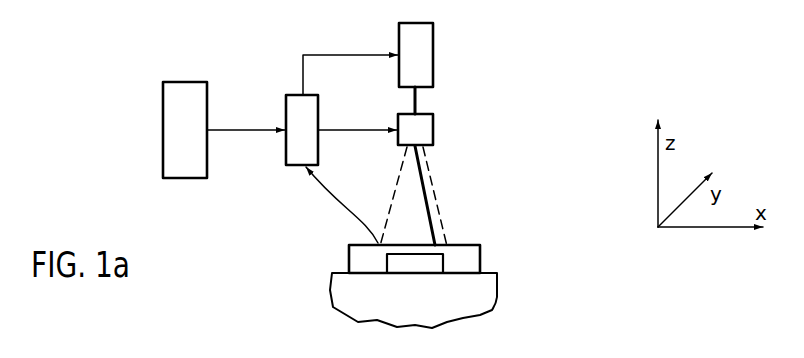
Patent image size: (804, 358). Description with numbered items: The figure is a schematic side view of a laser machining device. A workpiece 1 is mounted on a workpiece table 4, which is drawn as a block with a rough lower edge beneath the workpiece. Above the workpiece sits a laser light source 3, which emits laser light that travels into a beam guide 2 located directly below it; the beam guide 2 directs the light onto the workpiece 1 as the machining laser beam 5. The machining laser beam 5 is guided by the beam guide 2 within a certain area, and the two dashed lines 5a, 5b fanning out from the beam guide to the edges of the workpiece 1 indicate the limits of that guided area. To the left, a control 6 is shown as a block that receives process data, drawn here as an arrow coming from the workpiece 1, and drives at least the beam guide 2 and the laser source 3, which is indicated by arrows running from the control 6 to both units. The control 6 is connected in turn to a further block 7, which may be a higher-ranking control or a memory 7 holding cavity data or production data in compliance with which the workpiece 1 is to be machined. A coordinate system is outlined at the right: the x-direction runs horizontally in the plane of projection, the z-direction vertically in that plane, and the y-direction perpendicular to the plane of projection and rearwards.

The workpiece 1 is at (472, 262).
The beam guide 2 is at (425, 125).
The laser light source 3 is at (425, 45).
The workpiece table 4 is at (480, 303).
The machining laser beam 5 is at (418, 96).
The machining laser beam position 5a is at (428, 165).
The machining laser beam position 5b is at (397, 187).
The control 6 is at (293, 110).
The higher-ranking control or memory 7 is at (200, 160).